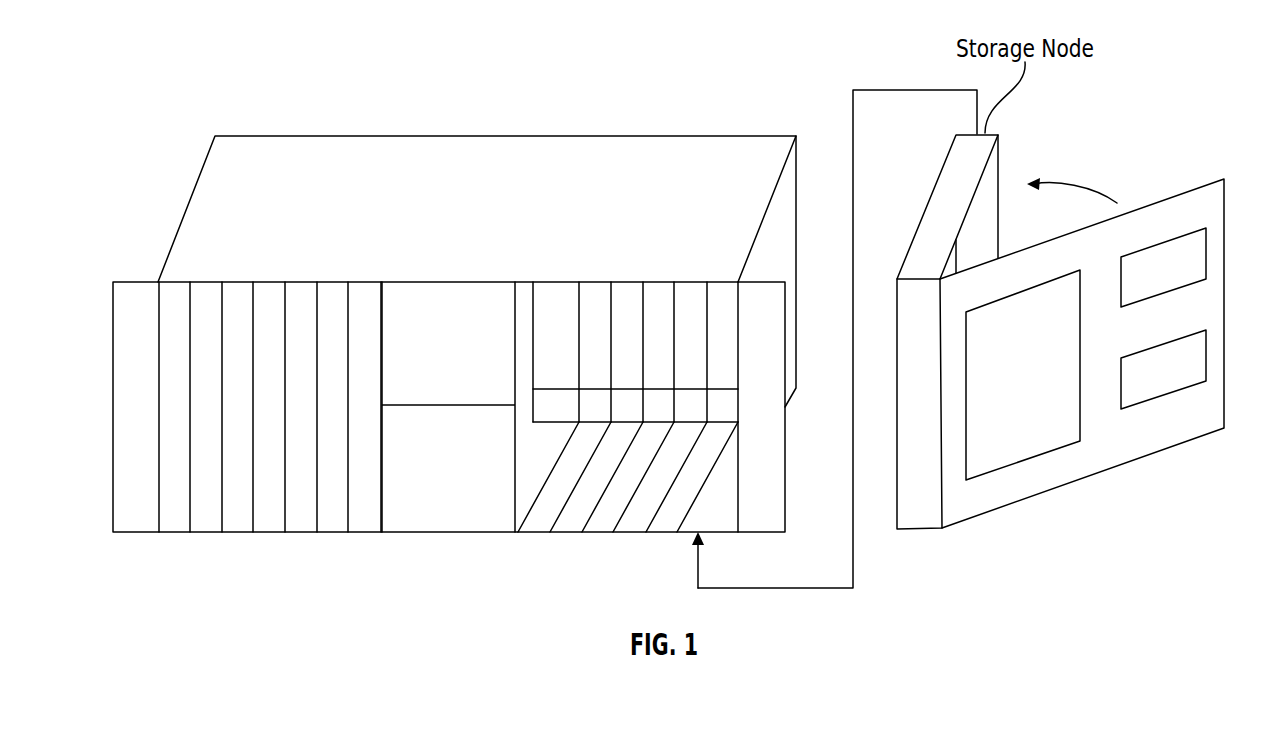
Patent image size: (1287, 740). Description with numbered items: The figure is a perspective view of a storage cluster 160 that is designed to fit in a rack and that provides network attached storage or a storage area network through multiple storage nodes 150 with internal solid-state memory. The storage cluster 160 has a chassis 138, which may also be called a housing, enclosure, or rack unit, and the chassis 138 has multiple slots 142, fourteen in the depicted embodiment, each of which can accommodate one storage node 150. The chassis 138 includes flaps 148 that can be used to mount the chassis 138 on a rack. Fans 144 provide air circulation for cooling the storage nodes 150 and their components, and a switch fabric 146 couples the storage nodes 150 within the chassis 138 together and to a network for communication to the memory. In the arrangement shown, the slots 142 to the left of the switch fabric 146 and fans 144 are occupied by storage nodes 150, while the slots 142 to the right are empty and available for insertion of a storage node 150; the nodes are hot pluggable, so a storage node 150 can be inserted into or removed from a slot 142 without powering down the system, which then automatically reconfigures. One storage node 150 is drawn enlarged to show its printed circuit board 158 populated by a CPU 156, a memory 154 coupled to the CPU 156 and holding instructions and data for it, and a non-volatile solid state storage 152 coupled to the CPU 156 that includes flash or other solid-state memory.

The storage cluster 160 is at (250, 80).
The chassis 138 is at (282, 136).
The flaps 148 is at (112, 405).
The storage node 150 is at (210, 533).
The switch fabric 146 is at (448, 282).
The fans 144 is at (450, 532).
The slots 142 is at (683, 533).
The printed circuit board 158 is at (1226, 218).
The non-volatile solid state storage 152 is at (1023, 462).
The memory 154 is at (1163, 242).
The CPU 156 is at (1207, 355).